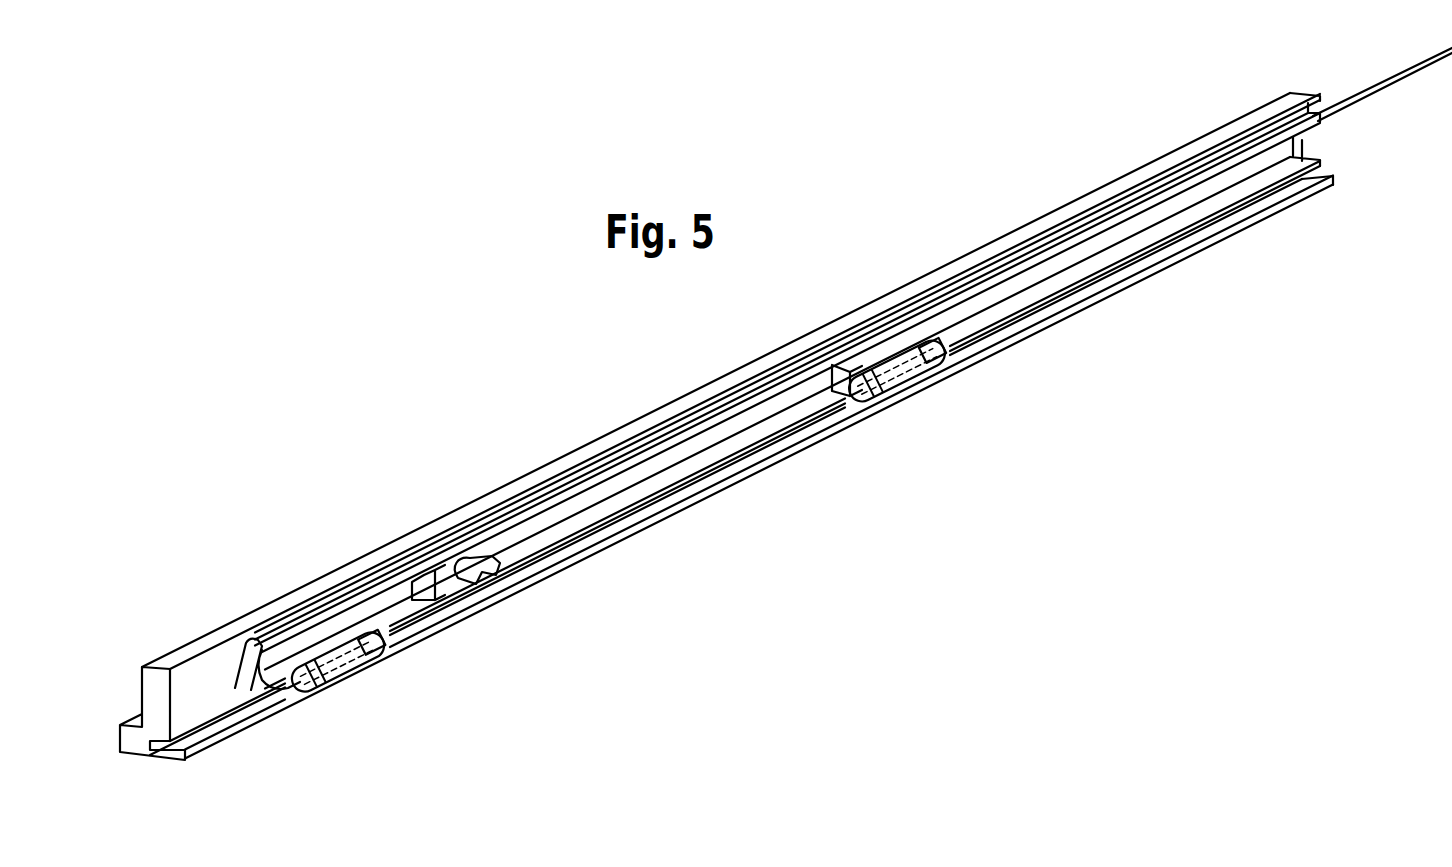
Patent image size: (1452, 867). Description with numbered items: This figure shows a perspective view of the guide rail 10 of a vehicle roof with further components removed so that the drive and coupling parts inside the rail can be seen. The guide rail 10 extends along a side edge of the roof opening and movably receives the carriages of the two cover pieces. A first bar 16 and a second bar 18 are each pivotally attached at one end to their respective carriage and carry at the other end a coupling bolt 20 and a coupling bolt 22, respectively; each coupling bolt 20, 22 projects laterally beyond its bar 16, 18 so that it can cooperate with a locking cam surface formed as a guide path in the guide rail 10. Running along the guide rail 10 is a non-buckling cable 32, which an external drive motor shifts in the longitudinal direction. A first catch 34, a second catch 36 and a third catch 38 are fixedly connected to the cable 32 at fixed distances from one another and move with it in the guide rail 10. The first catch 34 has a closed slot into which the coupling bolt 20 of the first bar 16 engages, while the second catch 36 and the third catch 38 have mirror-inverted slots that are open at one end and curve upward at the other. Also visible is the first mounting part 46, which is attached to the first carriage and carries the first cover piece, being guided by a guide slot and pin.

The guide rail 10 is at (197, 666).
The bar 16 is at (338, 668).
The bar 18 is at (895, 388).
The coupling bolt 20 is at (383, 650).
The coupling bolt 22 is at (938, 354).
The non-buckling cable 32 is at (1390, 86).
The first catch 34 is at (272, 650).
The second catch 36 is at (445, 590).
The third catch 38 is at (866, 356).
The first mounting part 46 is at (487, 570).